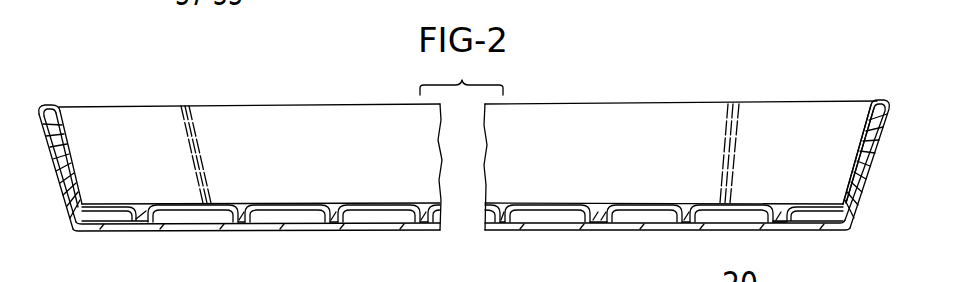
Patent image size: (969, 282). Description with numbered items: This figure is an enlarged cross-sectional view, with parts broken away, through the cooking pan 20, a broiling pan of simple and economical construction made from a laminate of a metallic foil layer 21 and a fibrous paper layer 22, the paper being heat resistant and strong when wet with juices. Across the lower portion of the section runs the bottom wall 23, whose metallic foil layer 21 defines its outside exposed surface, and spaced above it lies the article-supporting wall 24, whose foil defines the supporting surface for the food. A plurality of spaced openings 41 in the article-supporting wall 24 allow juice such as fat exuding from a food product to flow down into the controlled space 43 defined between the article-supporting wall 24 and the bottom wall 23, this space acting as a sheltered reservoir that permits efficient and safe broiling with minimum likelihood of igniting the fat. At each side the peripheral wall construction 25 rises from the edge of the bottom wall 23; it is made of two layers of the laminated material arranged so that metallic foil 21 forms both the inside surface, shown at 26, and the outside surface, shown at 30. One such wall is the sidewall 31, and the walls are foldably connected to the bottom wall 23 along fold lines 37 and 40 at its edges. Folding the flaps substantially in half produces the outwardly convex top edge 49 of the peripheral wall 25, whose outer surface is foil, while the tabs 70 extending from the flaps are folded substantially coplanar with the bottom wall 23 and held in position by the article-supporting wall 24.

The cooking pan 20 is at (694, 41).
The metallic foil layer 21 is at (63, 140).
The fibrous paper layer 22 is at (64, 182).
The bottom wall 23 is at (374, 231).
The article-supporting wall 24 is at (305, 204).
The peripheral wall construction 25 is at (852, 120).
The inside foil surface of peripheral wall 26 is at (853, 160).
The outside foil surface of peripheral wall 30 is at (862, 170).
The sidewall 31 is at (569, 112).
The fold line 37 is at (76, 232).
The fold line 40 is at (849, 231).
The spaced openings 41 is at (686, 204).
The controlled space 43 is at (180, 216).
The top edge 49 is at (44, 105).
The tabs 70 is at (102, 224).